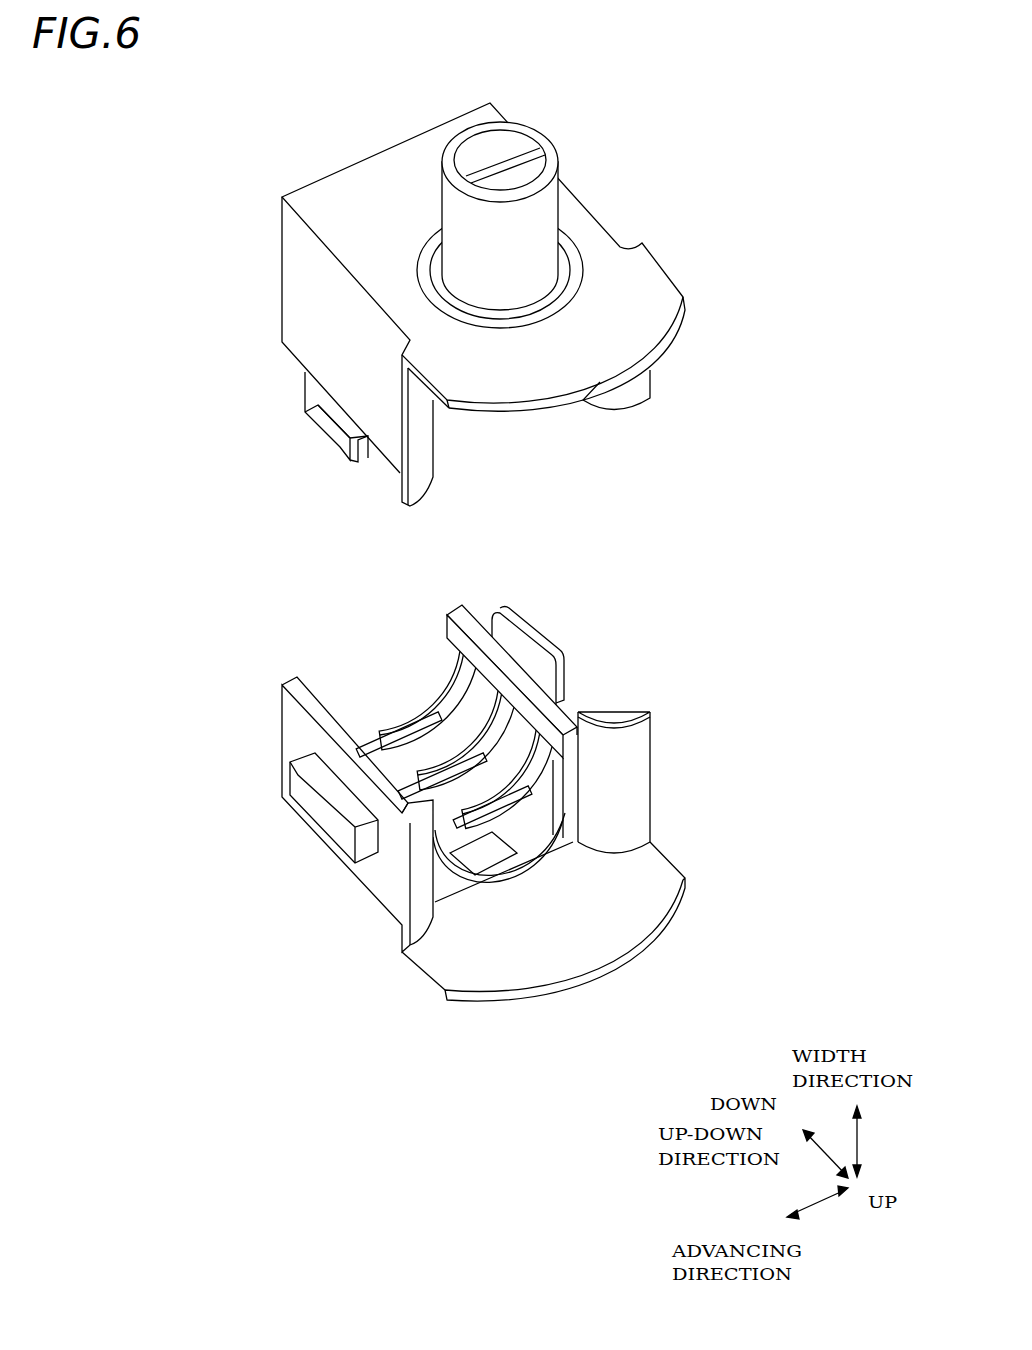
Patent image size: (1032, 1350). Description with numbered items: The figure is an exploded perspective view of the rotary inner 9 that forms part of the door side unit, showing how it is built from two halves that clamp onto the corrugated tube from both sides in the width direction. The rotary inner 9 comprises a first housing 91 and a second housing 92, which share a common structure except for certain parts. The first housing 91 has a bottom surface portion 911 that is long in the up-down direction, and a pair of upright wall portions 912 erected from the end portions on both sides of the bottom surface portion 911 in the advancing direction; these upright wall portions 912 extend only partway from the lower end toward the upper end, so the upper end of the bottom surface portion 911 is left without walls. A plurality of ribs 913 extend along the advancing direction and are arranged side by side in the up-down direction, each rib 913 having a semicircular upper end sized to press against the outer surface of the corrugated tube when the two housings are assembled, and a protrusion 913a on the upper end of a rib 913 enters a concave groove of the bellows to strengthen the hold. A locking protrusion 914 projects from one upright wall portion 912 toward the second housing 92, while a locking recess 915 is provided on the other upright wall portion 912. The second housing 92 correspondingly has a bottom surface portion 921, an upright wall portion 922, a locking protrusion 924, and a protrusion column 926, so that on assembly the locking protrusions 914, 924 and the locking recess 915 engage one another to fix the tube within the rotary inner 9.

The rotary inner 9 is at (551, 1218).
The first housing 91 is at (475, 774).
The bottom surface portion 911 is at (620, 923).
The upright wall portions 912 is at (465, 620).
The ribs 913 is at (450, 707).
The protrusion 913a is at (390, 752).
The locking protrusion 914 is at (537, 640).
The locking recess 915 is at (320, 813).
The second housing 92 is at (446, 299).
The bottom surface portion 921 is at (398, 178).
The upright wall portion 922 is at (307, 293).
The locking protrusion 924 is at (322, 437).
The protrusion column 926 is at (553, 158).